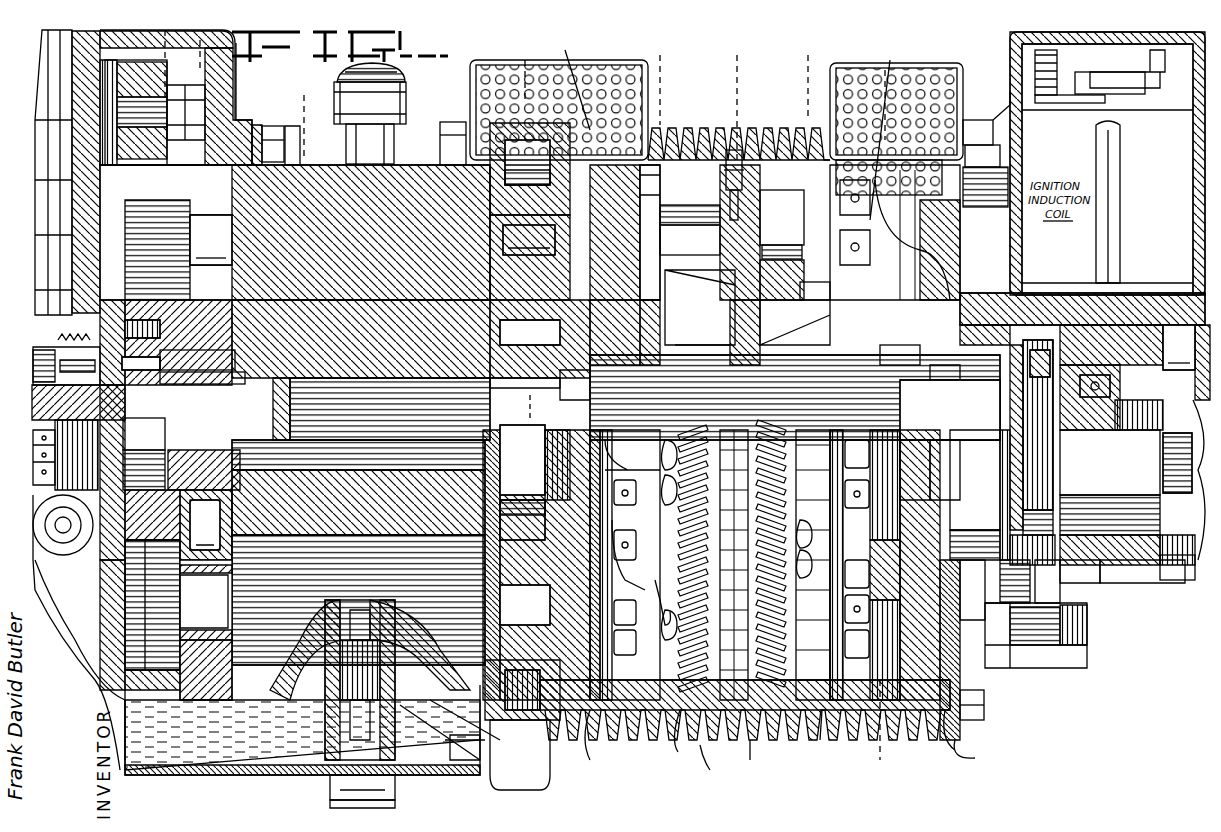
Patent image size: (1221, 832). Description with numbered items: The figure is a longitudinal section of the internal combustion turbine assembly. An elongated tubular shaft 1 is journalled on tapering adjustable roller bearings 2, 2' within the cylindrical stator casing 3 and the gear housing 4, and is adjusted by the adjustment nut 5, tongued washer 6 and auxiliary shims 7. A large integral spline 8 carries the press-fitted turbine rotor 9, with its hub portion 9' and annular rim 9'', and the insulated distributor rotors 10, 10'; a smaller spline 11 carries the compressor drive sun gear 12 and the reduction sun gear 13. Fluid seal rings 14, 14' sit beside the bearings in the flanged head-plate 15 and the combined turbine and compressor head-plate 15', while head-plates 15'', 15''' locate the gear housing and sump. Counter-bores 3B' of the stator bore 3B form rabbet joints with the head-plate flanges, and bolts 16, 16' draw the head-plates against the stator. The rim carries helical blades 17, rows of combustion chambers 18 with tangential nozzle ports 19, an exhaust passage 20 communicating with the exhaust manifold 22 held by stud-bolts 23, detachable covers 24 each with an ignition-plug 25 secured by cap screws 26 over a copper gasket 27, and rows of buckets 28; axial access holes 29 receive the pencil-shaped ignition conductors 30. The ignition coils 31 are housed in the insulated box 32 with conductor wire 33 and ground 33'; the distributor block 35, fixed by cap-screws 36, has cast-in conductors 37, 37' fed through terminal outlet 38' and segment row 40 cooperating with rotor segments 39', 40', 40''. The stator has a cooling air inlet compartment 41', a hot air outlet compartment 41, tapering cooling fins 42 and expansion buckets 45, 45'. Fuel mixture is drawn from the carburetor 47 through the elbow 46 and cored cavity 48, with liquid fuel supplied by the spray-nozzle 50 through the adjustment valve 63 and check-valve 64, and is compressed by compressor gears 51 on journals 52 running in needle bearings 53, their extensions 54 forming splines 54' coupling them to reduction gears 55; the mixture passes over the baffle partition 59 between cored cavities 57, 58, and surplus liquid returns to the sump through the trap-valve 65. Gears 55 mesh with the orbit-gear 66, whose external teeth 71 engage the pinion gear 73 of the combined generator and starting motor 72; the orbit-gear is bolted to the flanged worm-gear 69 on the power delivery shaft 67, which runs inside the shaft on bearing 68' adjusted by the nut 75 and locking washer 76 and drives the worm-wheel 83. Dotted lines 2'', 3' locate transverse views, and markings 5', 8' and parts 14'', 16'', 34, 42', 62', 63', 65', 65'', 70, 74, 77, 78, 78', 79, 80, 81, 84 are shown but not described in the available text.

The tubular shaft 1 is at (978, 420).
The roller bearing 2 is at (551, 468).
The roller bearing 2' is at (334, 421).
The section line 2''— 2'' is at (298, 443).
The stator casing 3 is at (452, 421).
The section line 3'— 3' is at (532, 417).
The stator bore 3B is at (677, 738).
The counter-bore 3B' is at (774, 739).
The gear housing 4 is at (262, 140).
The adjustment nut 5 is at (863, 415).
The section line 5' is at (809, 416).
The tongued washer 6 is at (1030, 470).
The auxiliary adjustment shims 7 is at (525, 386).
The integral spline 8 is at (714, 415).
The section line 8' is at (942, 417).
The turbine rotor 9 is at (764, 418).
The hub portion 9' is at (704, 322).
The annular rim 9'' is at (651, 232).
The distributor rotor 10 is at (812, 331).
The distributor rotor 10' is at (675, 321).
The integral spline 11 is at (290, 405).
The compressor drive sun gear 12 is at (290, 450).
The reduction gear assembly sun gear 13 is at (190, 450).
The fluid seal ring 14 is at (1056, 480).
The fluid seal ring 14' is at (545, 562).
The bearing 14'' is at (1112, 497).
The head-plate 15 is at (973, 659).
The head-plate 15' is at (558, 97).
The head-plate 15'' is at (293, 136).
The head-plate 15''' is at (254, 81).
The bolt 16 is at (1008, 432).
The bolt 16' is at (739, 116).
The bolt 16'' is at (265, 133).
The spokes or blades 17 is at (720, 297).
The combustion chambers 18 is at (712, 150).
The communication nozzle ports 19 is at (802, 576).
The exhaust passage 20 is at (762, 236).
The exhaust manifold 22 is at (728, 150).
The stud-bolts 23 is at (736, 152).
The combustion chamber cover 24 is at (662, 215).
The ignition-plug 25 is at (645, 250).
The cap screws 26 is at (636, 528).
The copper gasket 27 is at (637, 513).
The buckets 28 is at (676, 503).
The access holes 29 is at (800, 348).
The ignition conductors 30 is at (795, 322).
The ignition induction coils 31 is at (1040, 110).
The insulated covered box 32 is at (1193, 165).
The electrical conductor wire 33 is at (1135, 202).
The primary winding ground 33' is at (1070, 93).
The breaker arm 34 is at (1120, 95).
The distributor block 35 is at (910, 560).
The cap-screws 36 is at (876, 590).
The electrical conductor 37 is at (754, 560).
The electrical conductor 37' is at (905, 421).
The terminal outlet 38' is at (895, 232).
The conductor segments 39' is at (952, 453).
The conductor segments 40 is at (916, 474).
The conductor segments 40' is at (922, 452).
The conductor segments 40'' is at (566, 385).
The hot air outlet access compartment 41 is at (986, 108).
The cooling air inlet access compartment 41' is at (683, 111).
The cooling fins 42 is at (896, 720).
The fin 42' is at (798, 128).
The expansion chamber buckets 45 is at (745, 716).
The expansion chamber buckets 45' is at (773, 125).
The elbow 46 is at (406, 105).
The carburetor 47 is at (398, 80).
The cored cavity 48 is at (273, 405).
The spray-nozzle 50 is at (395, 800).
The compressor gears 51 is at (405, 185).
The extension journal 52 is at (520, 530).
The needle roller bearings 53 is at (371, 423).
The projecting extensions 54 is at (211, 240).
The splines 54' is at (211, 248).
The reduction gearing gears 55 is at (125, 330).
The cored cavity 57 is at (478, 130).
The pressure accumulating compartment 58 is at (527, 168).
The baffle partition 59 is at (530, 169).
The oil sump 62' is at (302, 737).
The adjustment valve 63 is at (336, 695).
The pump base 63' is at (362, 795).
The non-return check-valve 64 is at (360, 730).
The trap-valve 65 is at (526, 755).
The oil passage 65' is at (543, 686).
The oil pipe 65'' is at (471, 756).
The orbit-gear 66 is at (108, 595).
The power delivery shaft 67 is at (1100, 450).
The roller bearing 68' is at (635, 394).
The worm-gear 69 is at (66, 352).
The pulley 70 is at (40, 560).
The external teeth 71 is at (180, 140).
The combined generator and starting motor 72 is at (75, 95).
The pinion gear 73 is at (167, 75).
The starter housing 74 is at (1125, 560).
The nut 75 is at (1163, 468).
The tongued locking washer 76 is at (1023, 420).
The washer 77 is at (150, 385).
The starter shaft 78 is at (1060, 627).
The starter bracket 78' is at (1082, 577).
The bearing 79 is at (1179, 347).
The bearing retainer 80 is at (1178, 356).
The bolt 81 is at (1170, 580).
The worm-wheel 83 is at (68, 585).
The perforated shield 84 is at (560, 60).